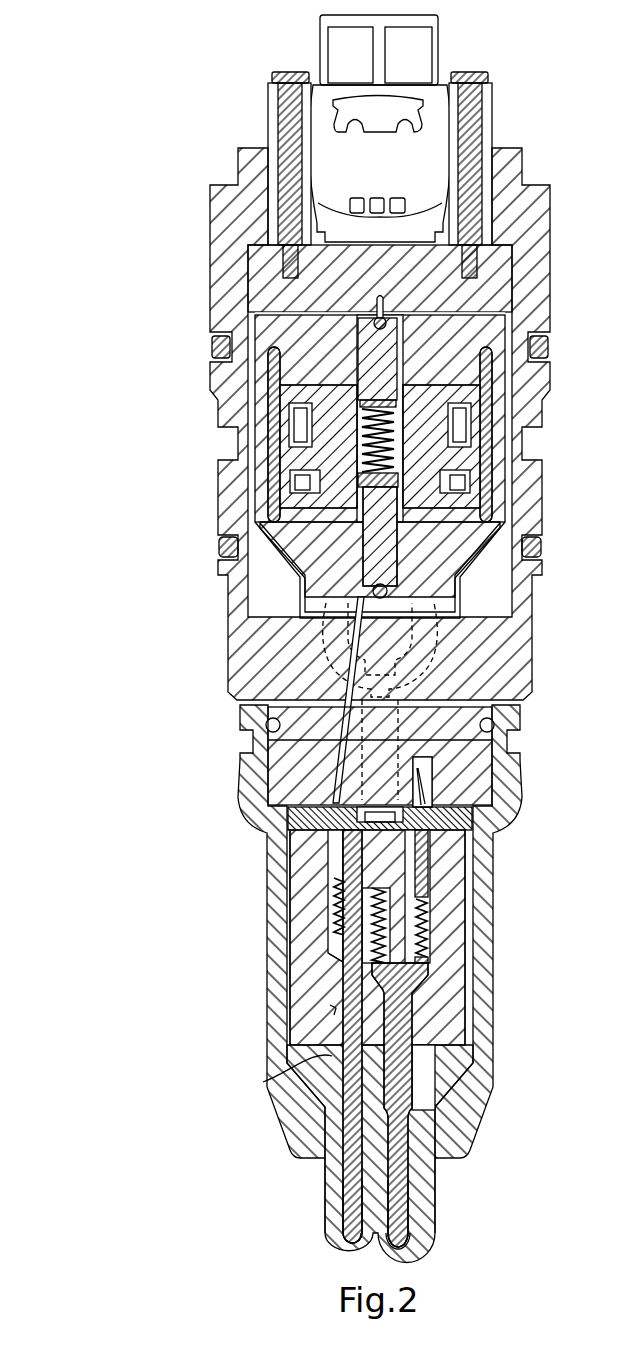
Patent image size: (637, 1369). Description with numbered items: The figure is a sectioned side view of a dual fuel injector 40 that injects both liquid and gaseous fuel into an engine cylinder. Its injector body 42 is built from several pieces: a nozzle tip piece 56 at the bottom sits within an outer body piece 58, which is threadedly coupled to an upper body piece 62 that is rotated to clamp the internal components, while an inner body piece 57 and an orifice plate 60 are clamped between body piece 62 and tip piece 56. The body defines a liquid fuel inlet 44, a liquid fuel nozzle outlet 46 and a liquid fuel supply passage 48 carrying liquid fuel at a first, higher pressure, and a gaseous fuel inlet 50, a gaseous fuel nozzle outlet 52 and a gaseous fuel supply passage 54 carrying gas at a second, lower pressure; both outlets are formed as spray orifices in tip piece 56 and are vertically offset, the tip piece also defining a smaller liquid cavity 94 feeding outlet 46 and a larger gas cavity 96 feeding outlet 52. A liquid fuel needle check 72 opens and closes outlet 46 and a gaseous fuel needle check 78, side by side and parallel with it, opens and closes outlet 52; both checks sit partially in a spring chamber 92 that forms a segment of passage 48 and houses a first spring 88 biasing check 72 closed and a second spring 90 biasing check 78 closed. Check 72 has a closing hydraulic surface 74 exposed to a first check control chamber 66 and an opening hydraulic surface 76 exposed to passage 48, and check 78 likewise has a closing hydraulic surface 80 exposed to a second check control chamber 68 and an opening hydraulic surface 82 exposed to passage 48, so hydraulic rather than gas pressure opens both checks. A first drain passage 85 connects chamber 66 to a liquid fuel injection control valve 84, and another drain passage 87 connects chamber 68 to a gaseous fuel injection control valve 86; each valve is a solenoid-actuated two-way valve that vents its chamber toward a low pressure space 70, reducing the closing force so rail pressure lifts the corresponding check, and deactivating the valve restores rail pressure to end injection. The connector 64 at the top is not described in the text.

The dual fuel injector 40 is at (55, 148).
The injector body 42 is at (218, 402).
The liquid fuel inlet 44 is at (440, 648).
The liquid fuel nozzle outlet 46 is at (350, 1244).
The liquid fuel supply passage 48 is at (365, 655).
The gaseous fuel inlet 50 is at (437, 675).
The gaseous fuel nozzle outlet 52 is at (425, 1244).
The gaseous fuel supply passage 54 is at (360, 772).
The nozzle tip piece 56 is at (436, 1207).
The inner body piece 57 is at (456, 897).
The outer body piece 58 is at (494, 1073).
The orifice plate 60 is at (482, 842).
The upper body piece 62 is at (542, 505).
The electrical connector 64 is at (533, 185).
The first check control chamber 66 is at (300, 845).
The second check control chamber 68 is at (466, 885).
The low pressure space 70 is at (388, 322).
The liquid fuel needle check 72 is at (353, 980).
The closing hydraulic surface 74 is at (330, 822).
The opening hydraulic surface 76 is at (342, 954).
The gaseous fuel needle check 78 is at (401, 1027).
The closing hydraulic surface 80 is at (460, 812).
The opening hydraulic surface 82 is at (414, 997).
The liquid fuel injection control valve 84 is at (228, 552).
The first drain passage 85 is at (333, 787).
The gaseous fuel injection control valve 86 is at (351, 331).
The drain passage 87 is at (387, 297).
The first spring 88 is at (334, 905).
The second spring 90 is at (428, 922).
The spring chamber 92 is at (333, 1012).
The liquid cavity 94 is at (344, 1183).
The gas cavity 96 is at (412, 1177).